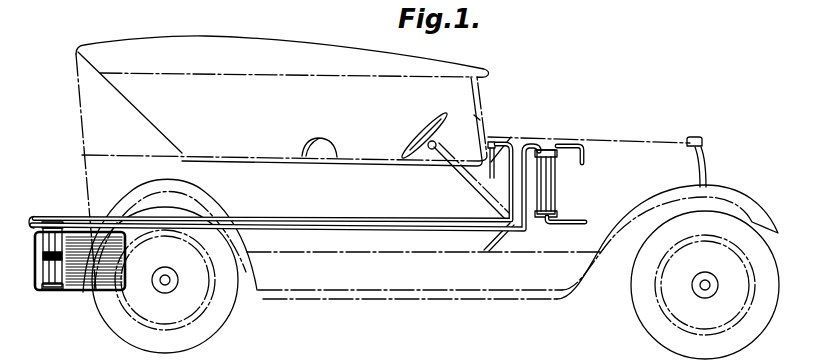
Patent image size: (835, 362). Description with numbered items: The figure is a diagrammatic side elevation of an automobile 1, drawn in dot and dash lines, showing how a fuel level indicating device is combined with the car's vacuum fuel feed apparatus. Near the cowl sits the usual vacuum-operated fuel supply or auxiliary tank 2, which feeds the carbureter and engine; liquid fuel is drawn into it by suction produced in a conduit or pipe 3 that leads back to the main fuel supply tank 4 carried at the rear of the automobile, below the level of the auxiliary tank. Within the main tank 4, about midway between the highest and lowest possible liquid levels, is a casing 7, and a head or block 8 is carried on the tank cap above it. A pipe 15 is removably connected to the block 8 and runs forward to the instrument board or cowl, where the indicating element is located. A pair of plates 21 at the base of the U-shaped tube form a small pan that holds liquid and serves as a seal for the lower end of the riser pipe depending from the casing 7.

The automobile 1 is at (258, 167).
The vacuum-operated fuel supply or auxiliary tank 2 is at (557, 191).
The conduit or pipe 3 is at (335, 230).
The main fuel supply tank 4 is at (40, 291).
The casing 7 is at (45, 255).
The head or block 8 is at (55, 221).
The pipe 15 is at (323, 217).
The plates 21 is at (60, 291).